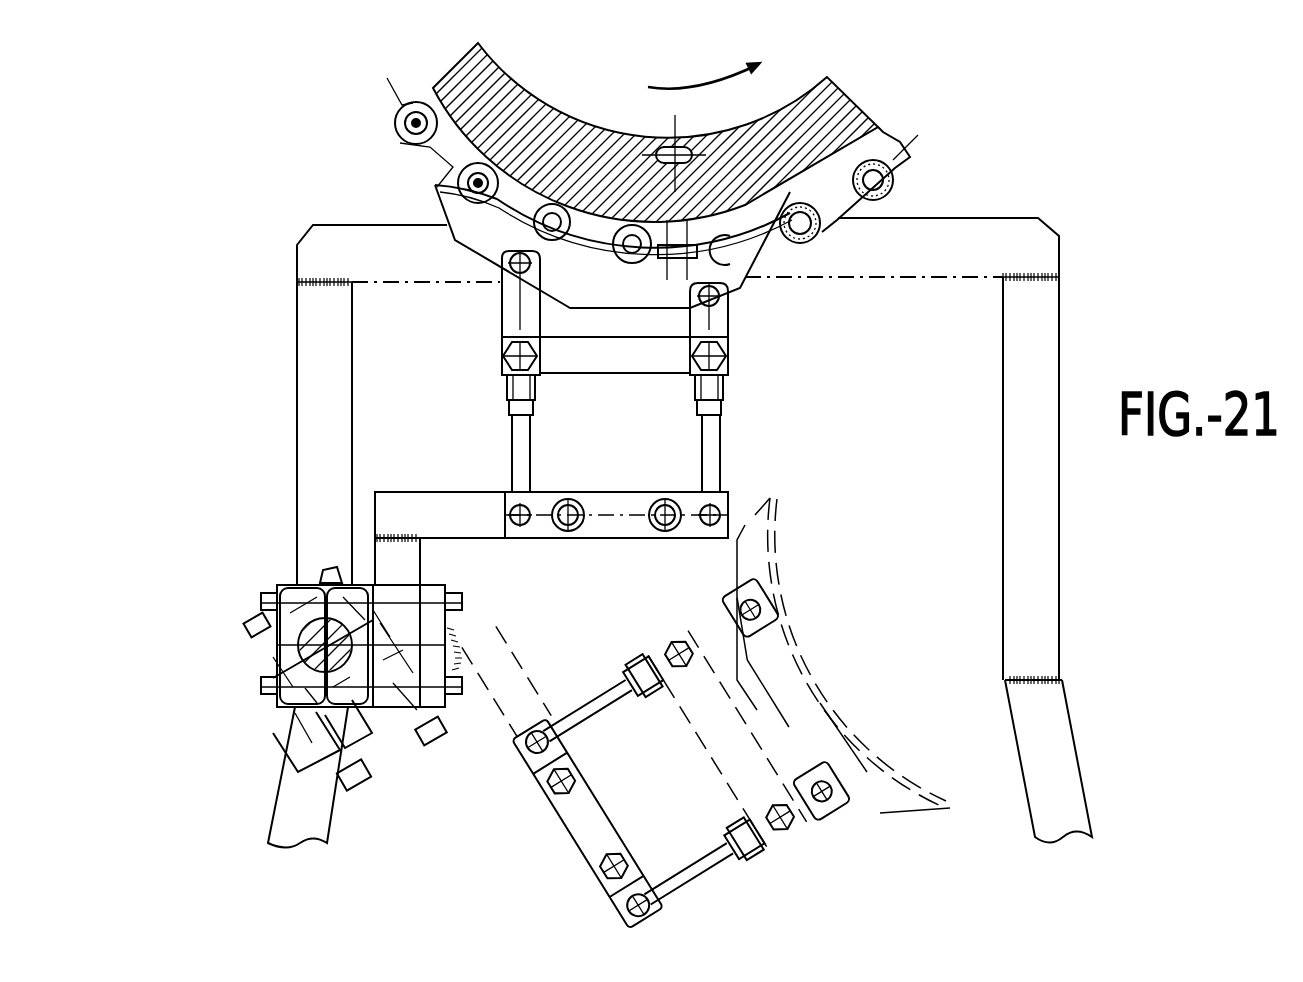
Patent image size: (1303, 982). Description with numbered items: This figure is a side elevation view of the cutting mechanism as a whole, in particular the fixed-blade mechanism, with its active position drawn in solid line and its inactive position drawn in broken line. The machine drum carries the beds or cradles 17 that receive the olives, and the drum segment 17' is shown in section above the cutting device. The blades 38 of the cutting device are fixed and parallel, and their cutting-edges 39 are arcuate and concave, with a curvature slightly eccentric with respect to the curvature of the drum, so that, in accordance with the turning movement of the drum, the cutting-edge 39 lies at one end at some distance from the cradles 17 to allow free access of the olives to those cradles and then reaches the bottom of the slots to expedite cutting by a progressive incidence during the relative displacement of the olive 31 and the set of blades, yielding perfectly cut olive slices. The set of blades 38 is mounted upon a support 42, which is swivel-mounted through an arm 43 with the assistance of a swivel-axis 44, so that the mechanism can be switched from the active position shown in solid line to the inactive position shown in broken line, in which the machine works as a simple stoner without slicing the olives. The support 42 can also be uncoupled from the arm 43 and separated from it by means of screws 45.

The beds or cradles 17 is at (555, 305).
The hatched shoe segment 17' is at (658, 130).
The olive 31 is at (402, 132).
The blades 38 is at (471, 232).
The cutting-edges 39 is at (514, 248).
The support 42 is at (513, 310).
The arm 43 is at (408, 508).
The swivel-axis 44 is at (298, 646).
The screws 45 is at (572, 535).